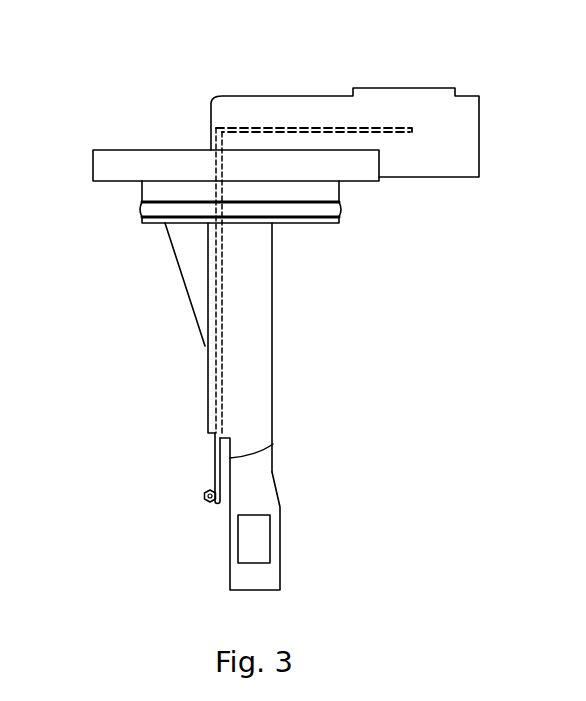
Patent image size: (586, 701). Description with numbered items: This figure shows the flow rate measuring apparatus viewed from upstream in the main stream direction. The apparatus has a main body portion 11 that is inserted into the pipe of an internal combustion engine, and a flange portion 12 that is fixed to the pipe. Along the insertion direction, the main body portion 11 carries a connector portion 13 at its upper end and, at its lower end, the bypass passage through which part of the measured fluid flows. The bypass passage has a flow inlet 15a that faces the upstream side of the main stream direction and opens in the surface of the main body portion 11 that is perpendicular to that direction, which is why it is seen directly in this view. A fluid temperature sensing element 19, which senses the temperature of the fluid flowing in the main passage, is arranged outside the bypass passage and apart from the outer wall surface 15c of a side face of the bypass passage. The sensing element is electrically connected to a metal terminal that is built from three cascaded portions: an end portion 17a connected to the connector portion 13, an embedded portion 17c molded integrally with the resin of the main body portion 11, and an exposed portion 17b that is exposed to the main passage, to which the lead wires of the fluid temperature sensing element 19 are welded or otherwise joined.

The main body portion 11 is at (273, 337).
The flange portion 12 is at (125, 149).
The connector portion 13 is at (209, 108).
The flow inlet 15a is at (262, 532).
The outer wall surface 15c is at (273, 447).
The end portion 17a is at (330, 129).
The exposed portion 17b is at (215, 460).
The embedded portion 17c is at (210, 388).
The fluid temperature sensing element 19 is at (205, 498).